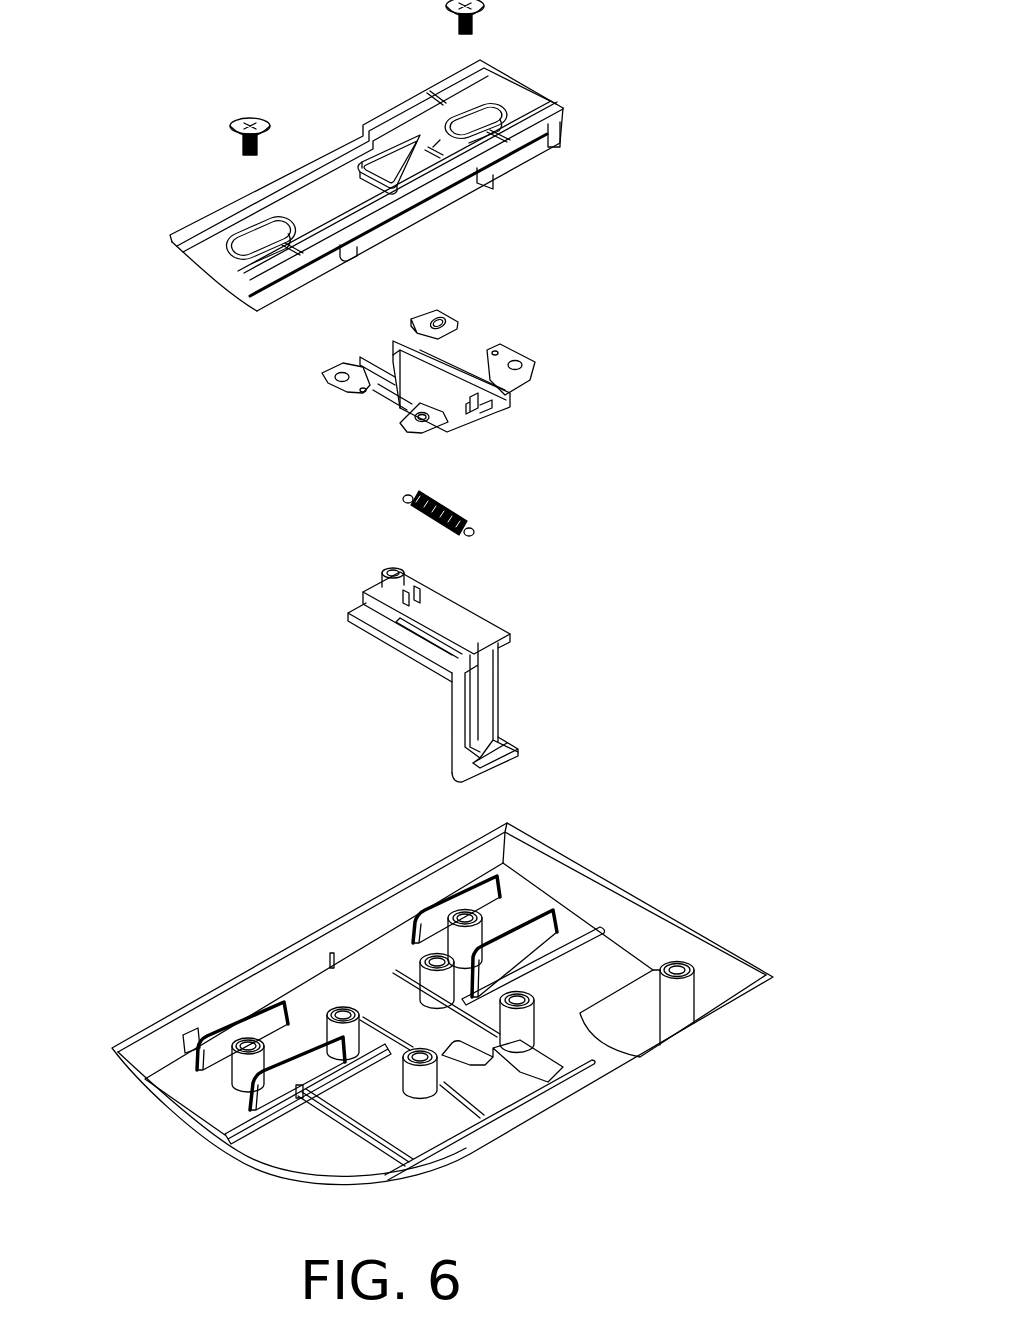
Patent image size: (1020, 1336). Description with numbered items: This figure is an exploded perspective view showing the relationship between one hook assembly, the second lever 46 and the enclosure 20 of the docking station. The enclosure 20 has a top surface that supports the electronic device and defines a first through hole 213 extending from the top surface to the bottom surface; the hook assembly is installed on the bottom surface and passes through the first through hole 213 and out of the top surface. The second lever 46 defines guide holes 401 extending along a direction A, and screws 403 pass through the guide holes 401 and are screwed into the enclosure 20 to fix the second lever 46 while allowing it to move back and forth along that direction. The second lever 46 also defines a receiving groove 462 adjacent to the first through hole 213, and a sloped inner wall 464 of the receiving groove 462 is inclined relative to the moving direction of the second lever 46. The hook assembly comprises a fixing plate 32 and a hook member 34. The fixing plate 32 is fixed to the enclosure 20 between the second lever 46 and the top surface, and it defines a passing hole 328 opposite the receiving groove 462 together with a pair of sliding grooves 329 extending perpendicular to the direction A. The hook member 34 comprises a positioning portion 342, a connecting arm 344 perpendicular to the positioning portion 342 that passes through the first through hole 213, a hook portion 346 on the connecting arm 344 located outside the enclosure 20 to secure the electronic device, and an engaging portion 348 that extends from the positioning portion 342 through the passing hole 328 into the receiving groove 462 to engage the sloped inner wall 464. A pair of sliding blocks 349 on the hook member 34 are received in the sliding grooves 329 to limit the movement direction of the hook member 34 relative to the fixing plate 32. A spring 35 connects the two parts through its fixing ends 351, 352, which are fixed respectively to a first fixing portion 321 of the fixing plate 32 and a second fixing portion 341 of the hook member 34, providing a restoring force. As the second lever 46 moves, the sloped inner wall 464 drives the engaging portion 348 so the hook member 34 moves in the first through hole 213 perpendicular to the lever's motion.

The enclosure 20 is at (442, 986).
The first through hole 213 is at (467, 1062).
The fixing plate 32 is at (417, 359).
The first fixing portion 321 is at (467, 382).
The passing hole 328 is at (395, 356).
The sliding groove 329 is at (472, 410).
The hook member 34 is at (537, 660).
The second fixing portion 341 is at (412, 598).
The positioning portion 342 is at (476, 625).
The connecting arm 344 is at (498, 690).
The hook portion 346 is at (518, 753).
The engaging portion 348 is at (398, 587).
The sliding block 349 is at (460, 623).
The spring 35 is at (444, 506).
The fixing end 351 is at (473, 533).
The fixing end 352 is at (404, 499).
The second lever 46 is at (386, 181).
The receiving groove 462 is at (397, 170).
The sloped inner wall 464 is at (428, 150).
The guide hole 401 is at (260, 241).
The screw 403 is at (240, 126).